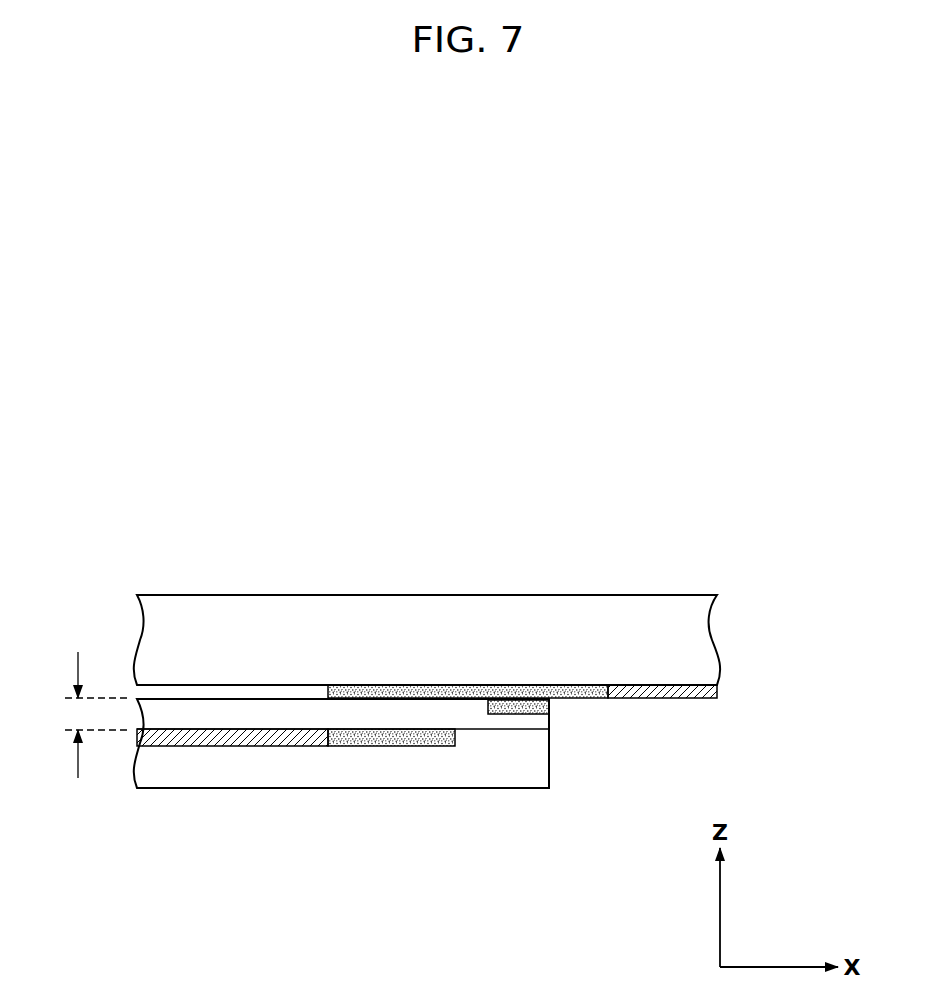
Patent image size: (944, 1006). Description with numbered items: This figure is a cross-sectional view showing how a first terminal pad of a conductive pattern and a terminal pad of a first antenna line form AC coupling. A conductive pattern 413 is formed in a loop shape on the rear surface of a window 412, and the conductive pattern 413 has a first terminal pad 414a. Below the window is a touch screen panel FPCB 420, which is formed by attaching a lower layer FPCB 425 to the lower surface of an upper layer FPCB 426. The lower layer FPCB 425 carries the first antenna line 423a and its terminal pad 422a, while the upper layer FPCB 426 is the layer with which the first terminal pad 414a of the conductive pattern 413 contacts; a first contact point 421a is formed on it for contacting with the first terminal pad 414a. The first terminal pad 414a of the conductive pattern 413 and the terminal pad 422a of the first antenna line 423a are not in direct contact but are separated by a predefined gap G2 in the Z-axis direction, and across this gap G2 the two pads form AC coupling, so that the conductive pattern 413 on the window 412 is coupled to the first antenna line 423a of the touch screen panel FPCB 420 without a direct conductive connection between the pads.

The window 412 is at (543, 632).
The conductive pattern 413 is at (688, 698).
The first terminal pad 414a is at (365, 693).
The touch screen panel FPCB 420 is at (341, 790).
The first contact point 421a is at (532, 710).
The terminal pad 422a is at (358, 747).
The first antenna line 423a is at (227, 746).
The lower layer FPCB 425 is at (467, 752).
The upper layer FPCB 426 is at (518, 722).
The gap G2 is at (85, 715).